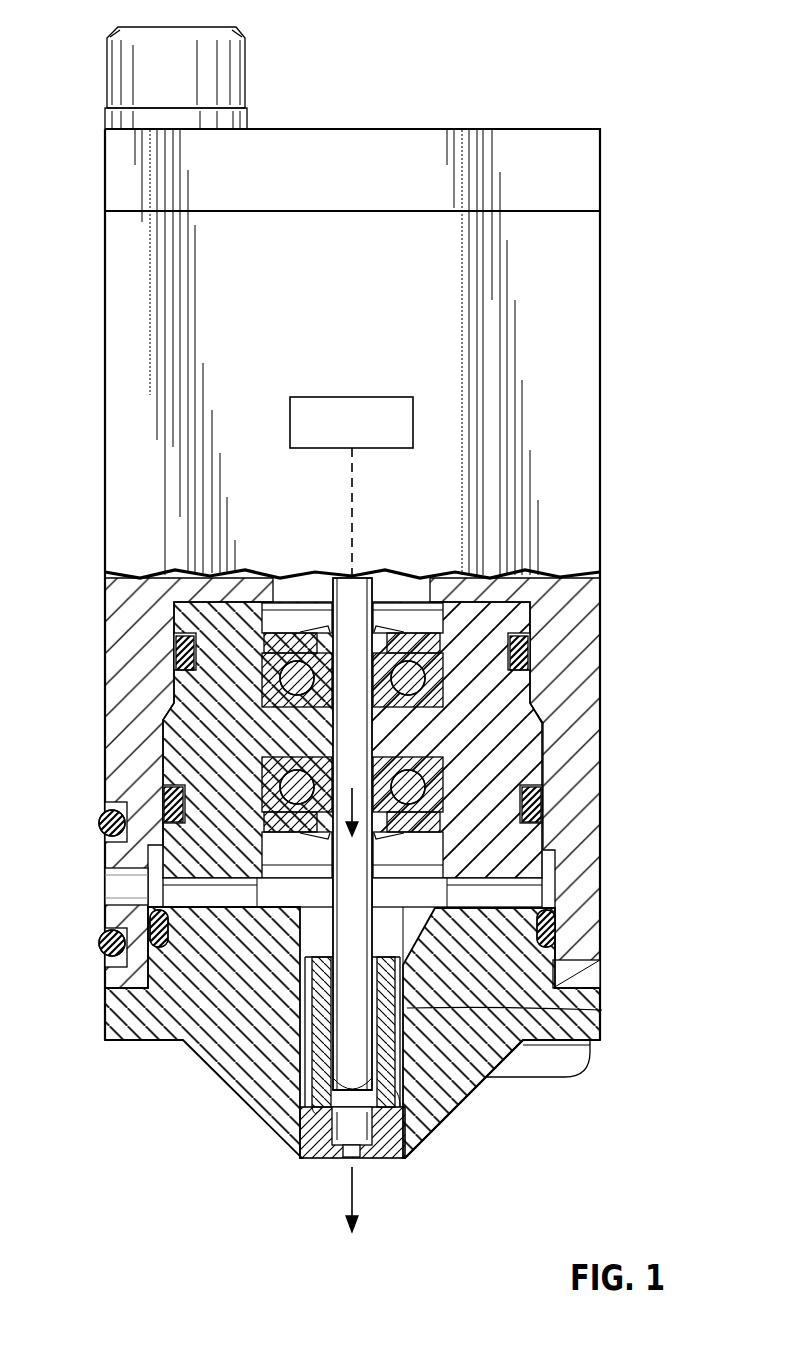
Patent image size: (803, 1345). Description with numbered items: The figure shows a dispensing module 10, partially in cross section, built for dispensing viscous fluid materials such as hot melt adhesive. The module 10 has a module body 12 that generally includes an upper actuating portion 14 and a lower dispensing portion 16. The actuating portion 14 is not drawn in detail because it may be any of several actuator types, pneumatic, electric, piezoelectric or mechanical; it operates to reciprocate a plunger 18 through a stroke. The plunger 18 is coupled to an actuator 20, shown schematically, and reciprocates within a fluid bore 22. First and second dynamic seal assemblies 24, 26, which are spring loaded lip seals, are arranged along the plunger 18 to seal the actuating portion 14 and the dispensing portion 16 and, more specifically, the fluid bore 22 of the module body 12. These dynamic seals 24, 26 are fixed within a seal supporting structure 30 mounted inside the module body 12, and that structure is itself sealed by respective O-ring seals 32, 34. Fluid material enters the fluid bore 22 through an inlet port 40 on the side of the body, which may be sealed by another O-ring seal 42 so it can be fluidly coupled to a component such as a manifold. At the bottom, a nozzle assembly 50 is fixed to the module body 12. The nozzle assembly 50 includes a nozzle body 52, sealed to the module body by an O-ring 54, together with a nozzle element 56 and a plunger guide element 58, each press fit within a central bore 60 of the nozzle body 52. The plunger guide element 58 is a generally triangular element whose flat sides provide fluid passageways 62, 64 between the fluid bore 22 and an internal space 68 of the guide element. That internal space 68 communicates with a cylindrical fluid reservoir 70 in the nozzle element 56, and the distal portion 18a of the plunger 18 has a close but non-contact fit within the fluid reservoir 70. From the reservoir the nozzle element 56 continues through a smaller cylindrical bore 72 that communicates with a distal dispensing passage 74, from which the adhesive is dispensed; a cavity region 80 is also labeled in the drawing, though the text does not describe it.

The dispensing module 10 is at (668, 76).
The module body 12 is at (602, 461).
The actuating portion 14 is at (602, 325).
The dispensing portion 16 is at (602, 714).
The plunger 18 is at (333, 591).
The distal portion of the plunger 18a is at (313, 1103).
The actuator 20 is at (334, 397).
The fluid bore 22 is at (292, 925).
The first dynamic seal assembly 24 is at (262, 685).
The second dynamic seal assembly 26 is at (262, 768).
The seal supporting structure 30 is at (528, 605).
The O-ring seal 32 is at (530, 649).
The O-ring seal 34 is at (542, 801).
The inlet port 40 is at (110, 888).
The O-ring seal 42 is at (106, 948).
The nozzle assembly 50 is at (105, 1012).
The nozzle body 52 is at (490, 1073).
The O-ring 54 is at (555, 932).
The nozzle element 56 is at (407, 1160).
The plunger guide element 58 is at (318, 1035).
The central bore 60 is at (602, 1010).
The fluid passageway 62 is at (305, 1000).
The fluid passageway 64 is at (397, 1052).
The internal space 68 is at (397, 1153).
The fluid reservoir 70 is at (306, 1160).
The smaller cylindrical bore 72 is at (378, 1160).
The distal dispensing passage 74 is at (352, 1160).
The cavity 80 is at (360, 993).